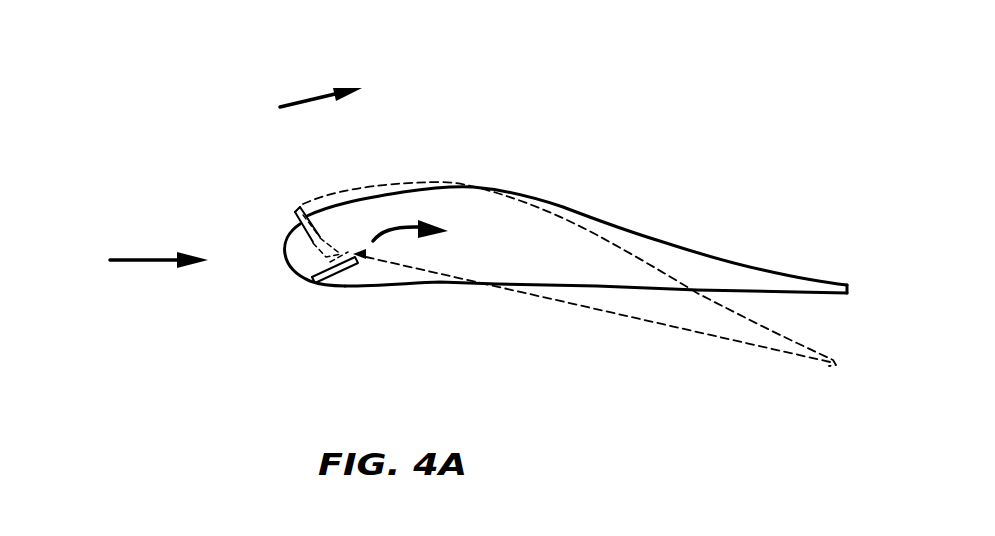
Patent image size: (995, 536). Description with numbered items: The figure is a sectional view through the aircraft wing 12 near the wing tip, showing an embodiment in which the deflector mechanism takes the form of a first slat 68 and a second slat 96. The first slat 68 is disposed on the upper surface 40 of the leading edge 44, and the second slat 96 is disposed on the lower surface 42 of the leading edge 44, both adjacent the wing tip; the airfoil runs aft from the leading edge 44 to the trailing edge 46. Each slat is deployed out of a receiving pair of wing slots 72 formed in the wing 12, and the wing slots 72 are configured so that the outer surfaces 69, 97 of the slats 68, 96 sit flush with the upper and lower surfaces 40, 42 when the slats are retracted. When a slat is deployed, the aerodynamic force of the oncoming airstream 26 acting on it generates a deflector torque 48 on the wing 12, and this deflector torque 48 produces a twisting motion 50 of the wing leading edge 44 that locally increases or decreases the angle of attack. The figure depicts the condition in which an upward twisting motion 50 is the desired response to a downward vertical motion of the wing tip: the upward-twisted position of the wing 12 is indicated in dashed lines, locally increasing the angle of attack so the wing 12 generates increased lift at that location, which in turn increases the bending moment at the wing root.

The wing 12 is at (578, 70).
The airstream 26 is at (140, 258).
The upper surface 40 is at (562, 203).
The lower surface 42 is at (510, 286).
The leading edge 44 is at (284, 256).
The trailing edge 46 is at (848, 289).
The deflector torque 48 is at (398, 222).
The twisting motion 50 is at (317, 92).
The first slat 68 is at (283, 196).
The outer surface of first slat 69 is at (297, 221).
The wing slots 72 is at (311, 214).
The second slat 96 is at (308, 298).
The outer surface of second slat 97 is at (318, 287).